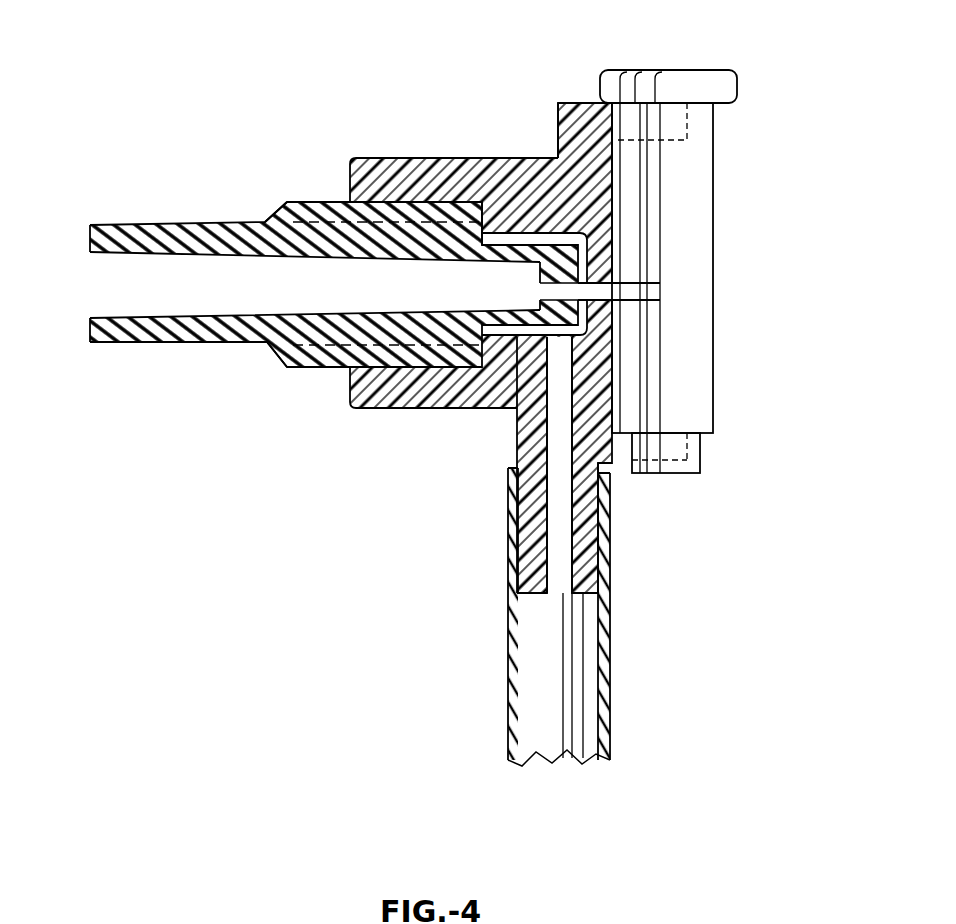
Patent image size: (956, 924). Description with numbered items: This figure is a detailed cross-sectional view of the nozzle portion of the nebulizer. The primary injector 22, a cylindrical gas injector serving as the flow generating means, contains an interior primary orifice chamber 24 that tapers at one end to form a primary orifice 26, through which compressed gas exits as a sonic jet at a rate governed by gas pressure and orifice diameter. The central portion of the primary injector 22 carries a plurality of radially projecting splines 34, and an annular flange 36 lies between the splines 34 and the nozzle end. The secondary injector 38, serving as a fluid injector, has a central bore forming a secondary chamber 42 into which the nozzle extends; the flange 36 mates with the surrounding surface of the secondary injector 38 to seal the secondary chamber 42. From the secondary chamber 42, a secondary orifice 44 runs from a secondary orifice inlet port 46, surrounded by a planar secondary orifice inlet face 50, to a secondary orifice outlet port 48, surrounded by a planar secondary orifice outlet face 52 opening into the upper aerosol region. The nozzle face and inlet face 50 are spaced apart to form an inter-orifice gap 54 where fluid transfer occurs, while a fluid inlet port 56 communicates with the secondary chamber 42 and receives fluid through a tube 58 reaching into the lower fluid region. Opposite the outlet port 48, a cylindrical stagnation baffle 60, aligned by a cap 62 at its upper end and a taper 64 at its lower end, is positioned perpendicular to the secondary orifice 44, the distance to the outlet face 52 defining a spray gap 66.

The primary injector 22 is at (168, 358).
The primary orifice chamber 24 is at (105, 288).
The primary orifice 26 is at (546, 268).
The splines 34 is at (290, 200).
The annular flange 36 is at (470, 203).
The secondary injector 38 is at (412, 153).
The secondary chamber 42 is at (516, 337).
The secondary orifice 44 is at (608, 282).
The secondary orifice inlet port 46 is at (557, 296).
The secondary orifice outlet port 48 is at (610, 292).
The secondary orifice inlet face 50 is at (573, 248).
The secondary orifice outlet face 52 is at (618, 216).
The inter-orifice gap 54 is at (603, 310).
The fluid inlet port 56 is at (558, 532).
The tube 58 is at (508, 720).
The stagnation baffle 60 is at (724, 163).
The cap 62 is at (725, 68).
The taper 64 is at (700, 463).
The spray gap 66 is at (617, 395).